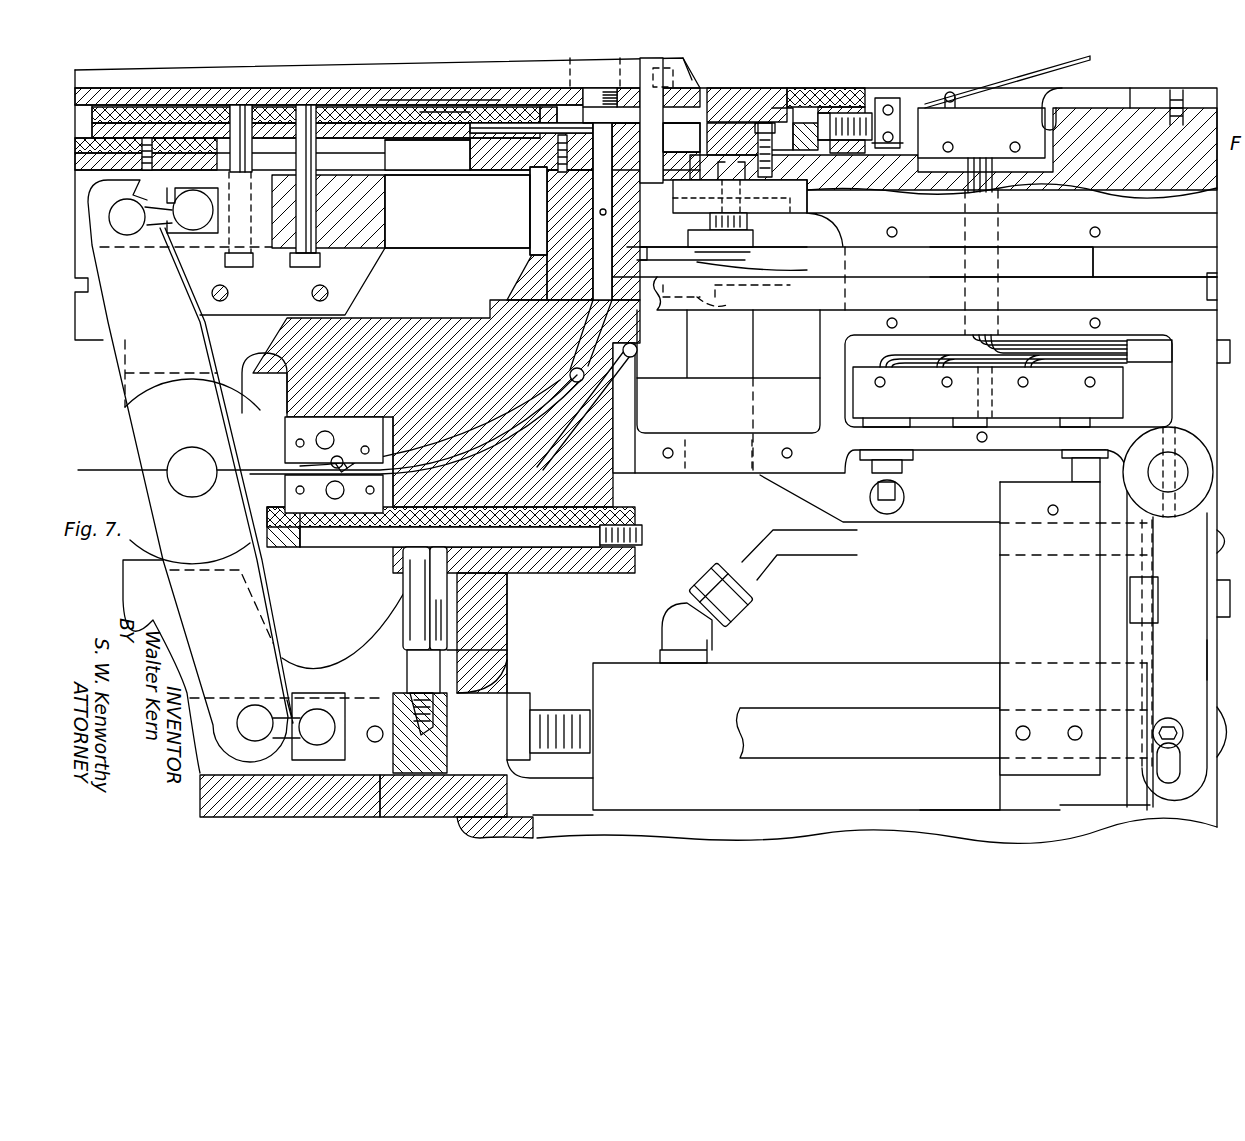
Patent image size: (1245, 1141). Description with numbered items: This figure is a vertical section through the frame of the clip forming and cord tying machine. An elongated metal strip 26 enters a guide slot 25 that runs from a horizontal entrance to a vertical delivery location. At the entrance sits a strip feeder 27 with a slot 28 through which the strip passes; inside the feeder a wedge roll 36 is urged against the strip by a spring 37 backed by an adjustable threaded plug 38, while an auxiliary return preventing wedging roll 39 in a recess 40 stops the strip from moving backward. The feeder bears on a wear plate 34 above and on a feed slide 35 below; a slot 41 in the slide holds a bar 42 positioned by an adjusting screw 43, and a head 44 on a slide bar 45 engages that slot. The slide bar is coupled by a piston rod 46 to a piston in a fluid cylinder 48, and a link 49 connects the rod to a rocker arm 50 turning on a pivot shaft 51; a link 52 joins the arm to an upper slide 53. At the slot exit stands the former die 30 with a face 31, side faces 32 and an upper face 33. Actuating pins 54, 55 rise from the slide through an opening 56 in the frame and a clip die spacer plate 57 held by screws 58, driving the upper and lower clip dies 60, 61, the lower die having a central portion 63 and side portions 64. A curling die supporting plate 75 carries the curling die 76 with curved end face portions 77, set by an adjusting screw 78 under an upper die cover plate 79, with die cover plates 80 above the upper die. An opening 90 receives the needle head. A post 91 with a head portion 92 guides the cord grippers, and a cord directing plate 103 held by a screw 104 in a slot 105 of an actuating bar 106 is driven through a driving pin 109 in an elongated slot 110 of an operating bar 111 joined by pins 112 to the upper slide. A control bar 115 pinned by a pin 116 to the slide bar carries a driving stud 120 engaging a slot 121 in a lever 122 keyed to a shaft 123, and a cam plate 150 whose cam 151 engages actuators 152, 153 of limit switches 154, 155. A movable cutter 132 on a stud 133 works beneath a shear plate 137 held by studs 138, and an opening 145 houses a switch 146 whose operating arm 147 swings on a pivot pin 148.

The guide slot 25 is at (470, 452).
The metal strip 26 is at (523, 416).
The strip feeder 27 is at (287, 450).
The slot 28 is at (287, 480).
The former die 30 is at (612, 142).
The face 31 is at (593, 125).
The side faces 32 is at (603, 123).
The upper face 33 is at (622, 120).
The wear plate 34 is at (330, 408).
The feed slide 35 is at (360, 545).
The wedge roll 36 is at (344, 470).
The spring 37 is at (362, 430).
The adjustable threaded plug 38 is at (410, 425).
The auxiliary return preventing wedging roll 39 is at (582, 368).
The recess 40 is at (585, 402).
The slot 41 is at (320, 548).
The bar 42 is at (547, 570).
The adjusting screw 43 is at (642, 533).
The head 44 is at (400, 540).
The slide bar 45 is at (497, 693).
The piston rod 46 is at (555, 722).
The fluid cylinder 48 is at (870, 663).
The link 49 is at (289, 720).
The rocker arm 50 is at (183, 588).
The pivot shaft 51 is at (192, 447).
The link 52 is at (158, 228).
The upper slide 53 is at (387, 212).
The actuating pin 54 is at (244, 135).
The actuating pin 55 is at (312, 118).
The opening 56 is at (437, 150).
The clip die spacer plate 57 is at (502, 150).
The screws 58 is at (148, 138).
The upper clip die 60 is at (393, 100).
The lower clip die 61 is at (432, 112).
The central portion 63 is at (472, 128).
The side portions 64 is at (485, 127).
The curling die supporting plate 75 is at (735, 130).
The curling die 76 is at (799, 115).
The curved end face portions 77 is at (711, 96).
The adjusting screw 78 is at (886, 98).
The upper die cover plate 79 is at (840, 112).
The die cover plates 80 is at (243, 110).
The opening 90 is at (690, 62).
The post 91 is at (745, 348).
The head portion 92 is at (753, 239).
The cord directing plate 103 is at (800, 270).
The screw 104 is at (642, 254).
The slot 105 is at (748, 254).
The actuating bar 106 is at (1055, 255).
The driving pin 109 is at (740, 280).
The elongated slot 110 is at (720, 300).
The operating bar 111 is at (1080, 290).
The pins 112 is at (313, 291).
The control bar 115 is at (1217, 693).
The pin 116 is at (376, 726).
The driving stud 120 is at (1170, 718).
The slot 121 is at (1170, 774).
The lever 122 is at (1210, 657).
The shaft 123 is at (1173, 466).
The movable cutter 132 is at (835, 216).
The stud 133 is at (752, 198).
The shear plate 137 is at (672, 196).
The studs 138 is at (795, 168).
The opening 145 is at (1048, 110).
The switch 146 is at (990, 118).
The operating arm 147 is at (1025, 80).
The pivot pin 148 is at (950, 92).
The cam plate 150 is at (998, 590).
The cam 151 is at (1010, 490).
The actuator 152 is at (905, 497).
The actuator 153 is at (1072, 474).
The limit switch 154 is at (928, 417).
The limit switch 155 is at (1040, 417).